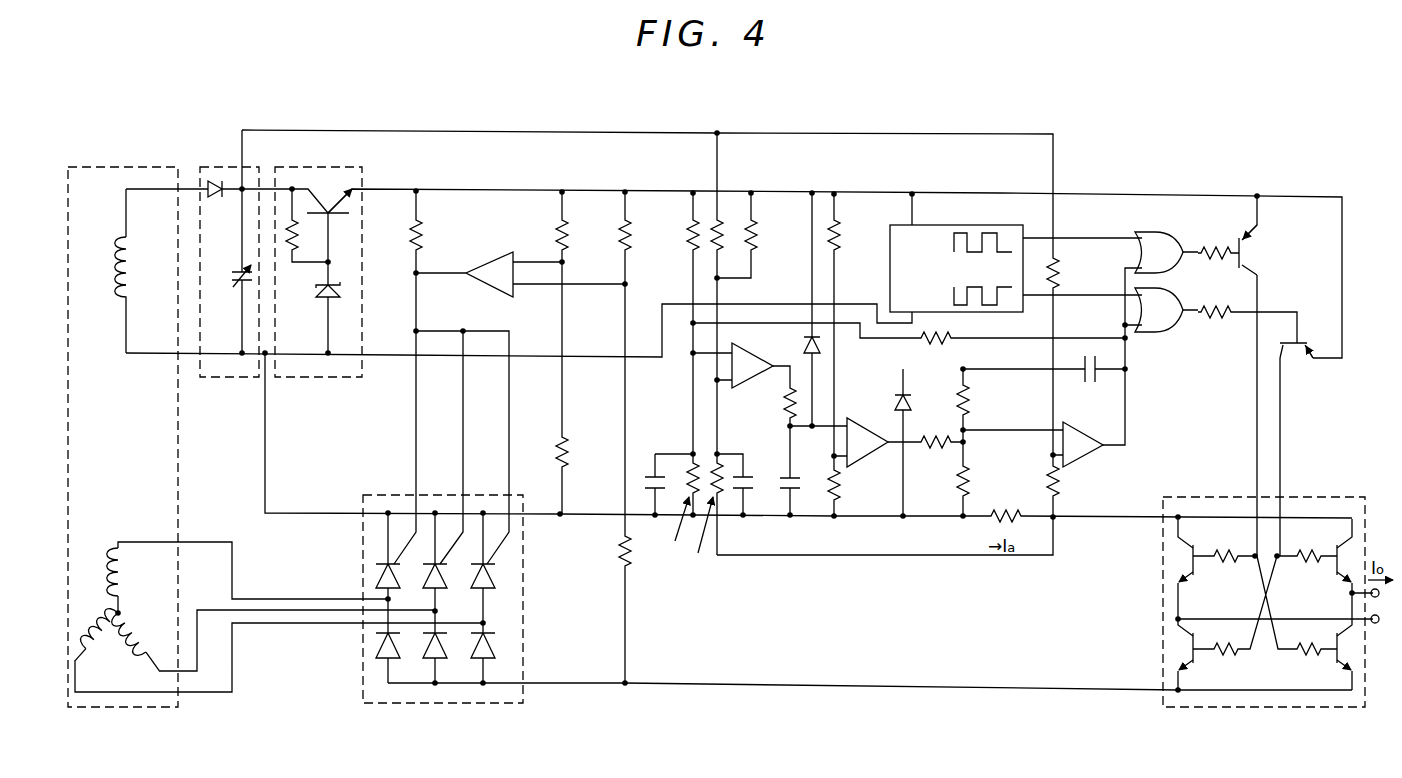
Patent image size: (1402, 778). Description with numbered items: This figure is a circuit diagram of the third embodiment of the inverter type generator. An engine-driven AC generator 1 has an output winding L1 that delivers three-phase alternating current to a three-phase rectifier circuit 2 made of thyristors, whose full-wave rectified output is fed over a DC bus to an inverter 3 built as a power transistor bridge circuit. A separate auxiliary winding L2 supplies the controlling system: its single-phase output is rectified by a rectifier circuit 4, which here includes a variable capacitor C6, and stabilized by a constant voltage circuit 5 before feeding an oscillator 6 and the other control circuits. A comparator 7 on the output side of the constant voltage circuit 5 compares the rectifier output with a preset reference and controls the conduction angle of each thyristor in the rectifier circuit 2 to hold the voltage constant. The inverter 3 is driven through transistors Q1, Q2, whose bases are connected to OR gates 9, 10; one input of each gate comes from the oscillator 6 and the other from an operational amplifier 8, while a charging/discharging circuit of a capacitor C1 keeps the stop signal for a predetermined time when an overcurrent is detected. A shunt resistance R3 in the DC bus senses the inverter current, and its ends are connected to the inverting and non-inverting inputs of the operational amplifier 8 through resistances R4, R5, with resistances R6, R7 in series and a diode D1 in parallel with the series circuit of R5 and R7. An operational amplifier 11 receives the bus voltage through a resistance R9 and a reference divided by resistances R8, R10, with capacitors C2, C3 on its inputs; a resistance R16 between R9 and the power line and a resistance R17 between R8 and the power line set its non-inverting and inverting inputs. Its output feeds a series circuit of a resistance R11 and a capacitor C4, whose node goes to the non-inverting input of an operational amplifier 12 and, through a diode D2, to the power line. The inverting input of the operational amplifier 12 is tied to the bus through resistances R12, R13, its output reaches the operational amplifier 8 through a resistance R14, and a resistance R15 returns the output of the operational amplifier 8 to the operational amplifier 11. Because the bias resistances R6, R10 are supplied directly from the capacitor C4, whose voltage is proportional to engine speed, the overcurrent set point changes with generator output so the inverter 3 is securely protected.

The AC generator 1 is at (148, 167).
The three-phase rectifier circuit 2 is at (523, 608).
The inverter 3 is at (1312, 493).
The rectifier circuit 4 is at (223, 163).
The constant voltage circuit 5 is at (313, 165).
The oscillator 6 is at (942, 224).
The comparator 7 is at (494, 256).
The operational amplifier 8 is at (1092, 452).
The OR gate 9 is at (1148, 230).
The OR gate 10 is at (1166, 333).
The operational amplifier 11 is at (748, 349).
The operational amplifier 12 is at (865, 424).
The output winding L1 is at (113, 613).
The auxiliary winding L2 is at (102, 271).
The capacitor C1 is at (1088, 385).
The capacitor C2 is at (752, 472).
The capacitor C3 is at (649, 460).
The capacitor C4 is at (798, 467).
The variable capacitor C6 is at (237, 270).
The resistance (shunt) R3 is at (1005, 501).
The resistance R4 is at (1066, 489).
The resistance R5 is at (944, 480).
The resistance R6 is at (1068, 272).
The resistance R7 is at (980, 399).
The resistance R8 is at (710, 522).
The resistance R9 is at (675, 513).
The resistance R10 is at (729, 246).
The resistance R11 is at (768, 402).
The resistance R12 is at (853, 487).
The resistance R13 is at (853, 236).
The resistance R14 is at (959, 446).
The resistance R15 is at (950, 332).
The resistance R16 is at (642, 235).
The resistance R17 is at (767, 235).
The diode D1 is at (918, 393).
The diode D2 is at (803, 332).
The transistor Q1 is at (1242, 235).
The transistor Q2 is at (1255, 349).